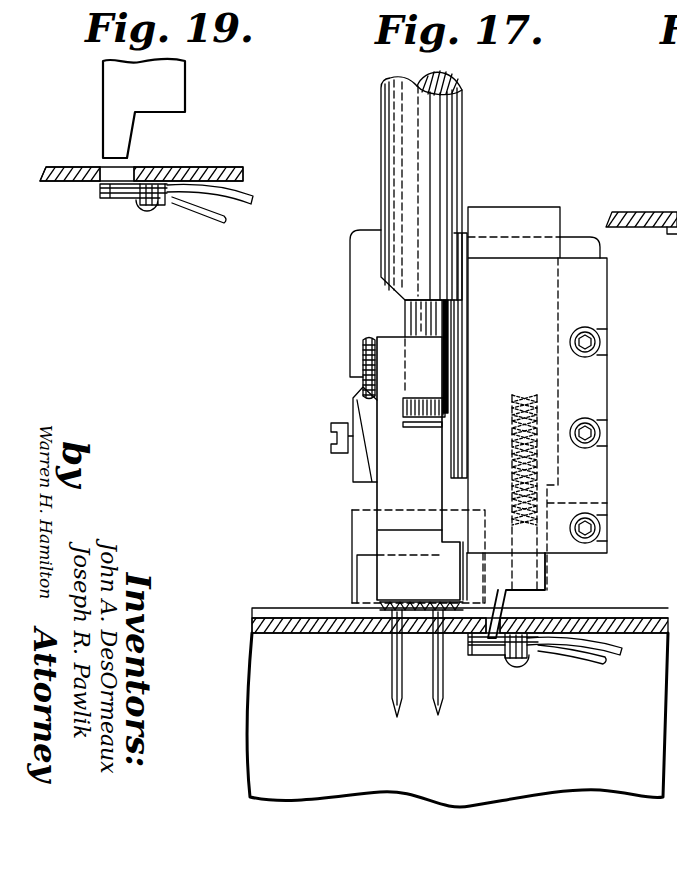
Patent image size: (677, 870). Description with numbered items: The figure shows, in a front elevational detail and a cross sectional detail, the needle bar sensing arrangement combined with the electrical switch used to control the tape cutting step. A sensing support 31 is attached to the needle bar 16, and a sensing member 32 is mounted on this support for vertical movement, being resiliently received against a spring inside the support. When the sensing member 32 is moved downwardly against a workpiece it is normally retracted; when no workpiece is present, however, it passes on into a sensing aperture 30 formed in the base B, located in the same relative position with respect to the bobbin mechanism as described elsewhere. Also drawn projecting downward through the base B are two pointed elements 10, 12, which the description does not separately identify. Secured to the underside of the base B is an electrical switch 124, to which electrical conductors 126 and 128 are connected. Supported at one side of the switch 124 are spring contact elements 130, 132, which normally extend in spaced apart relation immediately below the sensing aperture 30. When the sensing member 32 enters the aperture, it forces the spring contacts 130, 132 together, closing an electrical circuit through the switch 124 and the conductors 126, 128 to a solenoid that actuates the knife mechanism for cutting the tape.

In FIG. 17, the needle bar 16 is at (440, 133).
In FIG. 17, the sensing support 31 is at (585, 388).
In FIG. 19, the sensing member 32 is at (121, 136).
In FIG. 17, the sensing member 32 is at (490, 617).
In FIG. 19, the base B is at (230, 168).
In FIG. 17, the base B is at (312, 630).
In FIG. 19, the sensing aperture 30 is at (112, 177).
In FIG. 17, the sensing aperture 30 is at (495, 640).
In FIG. 17, the spike 10 is at (392, 680).
In FIG. 17, the spike 12 is at (435, 690).
In FIG. 19, the spring contact element 130 is at (102, 188).
In FIG. 17, the spring contact element 130 is at (456, 645).
In FIG. 19, the spring contact element 132 is at (112, 197).
In FIG. 17, the spring contact element 132 is at (471, 645).
In FIG. 19, the electrical switch 124 is at (163, 203).
In FIG. 17, the electrical switch 124 is at (525, 658).
In FIG. 19, the electrical conductor 126 is at (228, 213).
In FIG. 17, the electrical conductor 126 is at (596, 660).
In FIG. 19, the electrical conductor 128 is at (247, 197).
In FIG. 17, the electrical conductor 128 is at (608, 650).